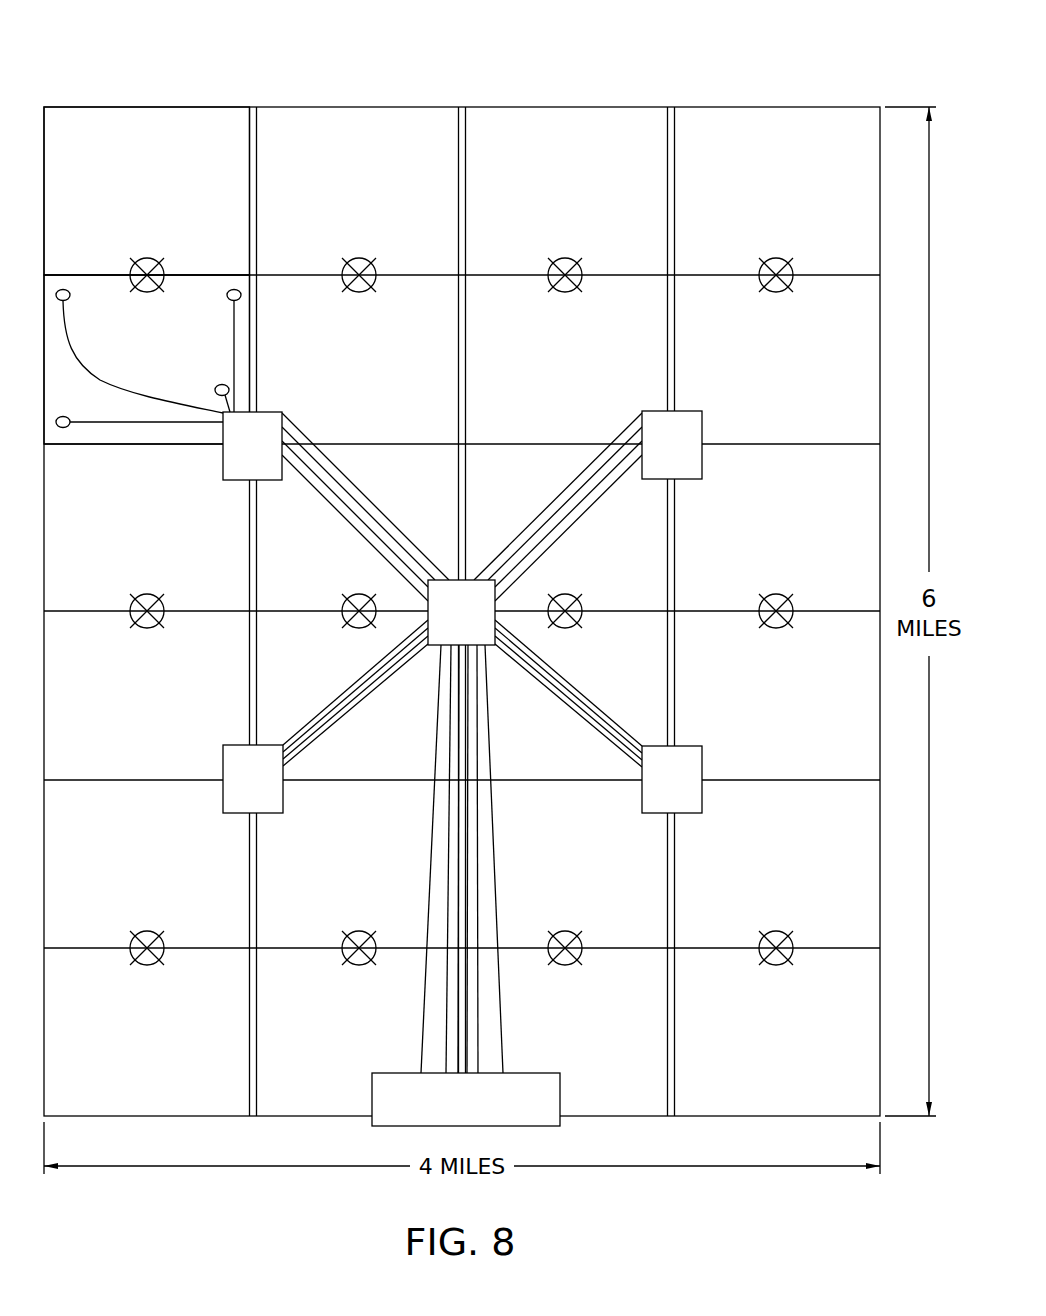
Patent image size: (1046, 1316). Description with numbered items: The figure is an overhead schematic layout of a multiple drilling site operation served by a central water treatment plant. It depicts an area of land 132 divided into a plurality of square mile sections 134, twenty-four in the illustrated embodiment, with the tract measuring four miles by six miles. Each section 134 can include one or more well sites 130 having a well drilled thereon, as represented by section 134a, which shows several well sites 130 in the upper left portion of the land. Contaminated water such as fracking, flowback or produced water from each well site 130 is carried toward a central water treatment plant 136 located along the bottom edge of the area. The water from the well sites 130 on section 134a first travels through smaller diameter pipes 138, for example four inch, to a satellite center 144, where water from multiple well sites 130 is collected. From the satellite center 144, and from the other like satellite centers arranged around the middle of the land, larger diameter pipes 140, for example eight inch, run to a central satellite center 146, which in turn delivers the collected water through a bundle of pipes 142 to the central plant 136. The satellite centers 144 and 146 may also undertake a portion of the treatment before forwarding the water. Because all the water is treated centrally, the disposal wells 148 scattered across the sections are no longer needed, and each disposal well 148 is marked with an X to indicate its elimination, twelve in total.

The well site 130 is at (63, 289).
The area of land 132 is at (145, 104).
The section 134 is at (128, 174).
The section 134a is at (118, 332).
The central water treatment plant 136 is at (444, 1110).
The pipe 138 is at (148, 425).
The pipe 140 is at (347, 524).
The pipe 142 is at (430, 873).
The satellite center 144 is at (274, 457).
The satellite center 146 is at (483, 623).
The disposal well 148 is at (148, 256).